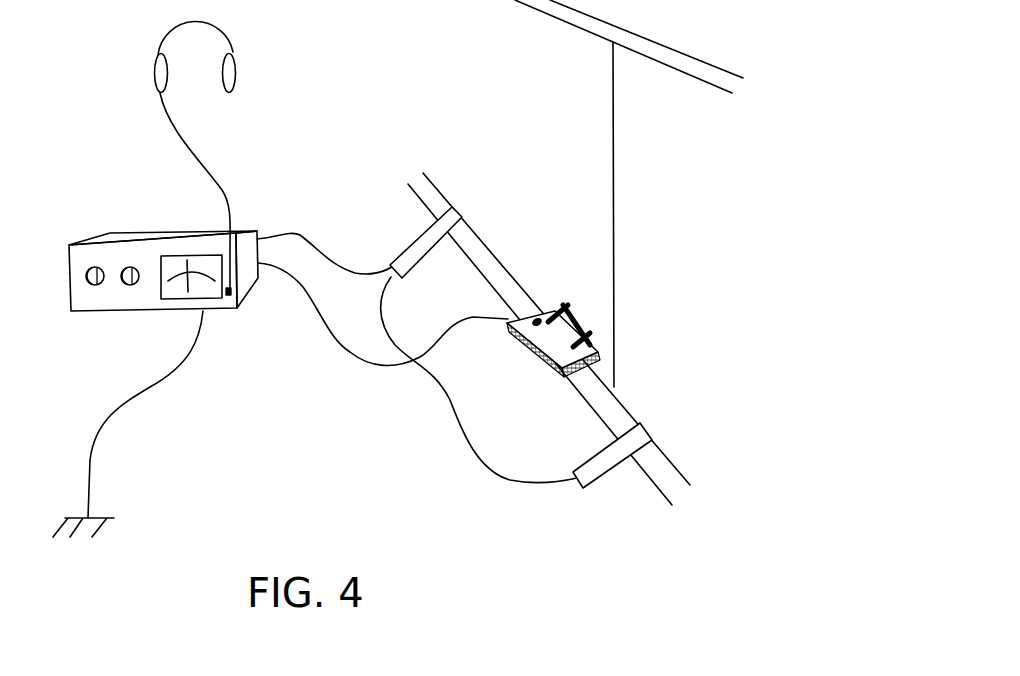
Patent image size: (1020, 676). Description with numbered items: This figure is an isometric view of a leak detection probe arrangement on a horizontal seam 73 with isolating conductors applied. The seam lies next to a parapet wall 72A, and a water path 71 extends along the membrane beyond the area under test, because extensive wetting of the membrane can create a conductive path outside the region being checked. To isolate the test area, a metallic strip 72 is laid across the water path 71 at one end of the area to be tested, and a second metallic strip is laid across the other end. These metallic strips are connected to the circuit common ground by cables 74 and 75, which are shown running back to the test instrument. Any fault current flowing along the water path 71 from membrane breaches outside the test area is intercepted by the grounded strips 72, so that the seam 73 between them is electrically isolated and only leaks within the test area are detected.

The water path 71 is at (418, 218).
The metallic strip 72 is at (393, 252).
The parapet wall 72A is at (653, 48).
The horizontal seam 73 is at (488, 246).
The cable 74 is at (463, 441).
The cable 75 is at (298, 232).